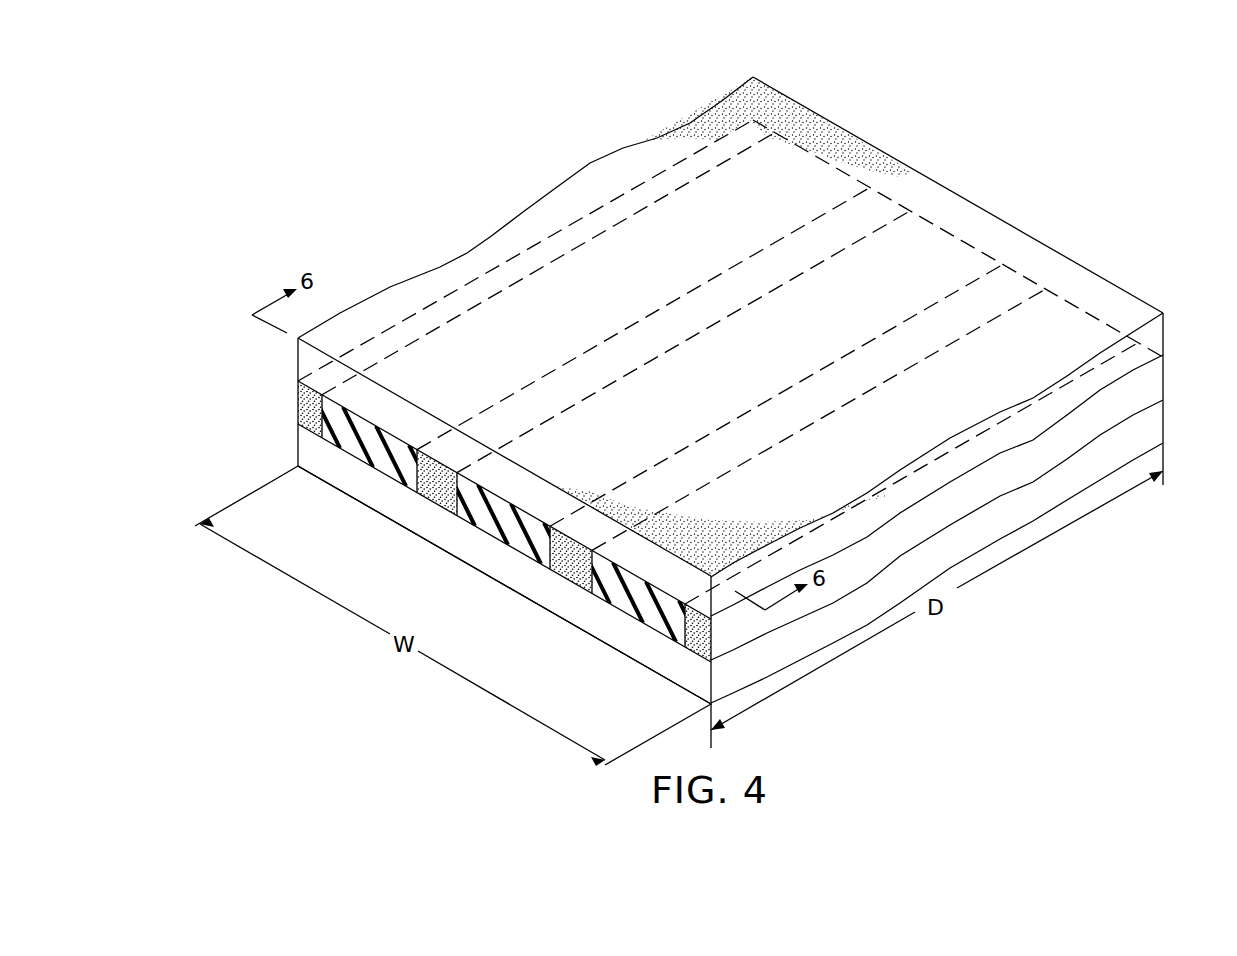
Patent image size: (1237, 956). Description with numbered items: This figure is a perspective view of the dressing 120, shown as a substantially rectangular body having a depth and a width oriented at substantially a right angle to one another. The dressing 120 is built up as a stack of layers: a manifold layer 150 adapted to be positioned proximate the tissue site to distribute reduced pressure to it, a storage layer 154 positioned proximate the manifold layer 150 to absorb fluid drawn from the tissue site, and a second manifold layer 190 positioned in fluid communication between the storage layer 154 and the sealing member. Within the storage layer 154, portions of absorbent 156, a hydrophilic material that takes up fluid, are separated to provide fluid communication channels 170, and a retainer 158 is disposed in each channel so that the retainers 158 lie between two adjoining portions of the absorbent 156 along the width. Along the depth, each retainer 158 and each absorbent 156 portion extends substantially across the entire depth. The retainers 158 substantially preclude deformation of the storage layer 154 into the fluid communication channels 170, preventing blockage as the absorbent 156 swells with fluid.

The dressing 120 is at (706, 397).
The second manifold layer 190 is at (455, 266).
The storage layer 154 is at (298, 392).
The absorbent 156 is at (352, 443).
The retainer 158 is at (443, 549).
The fluid communication channel 170 is at (298, 406).
The manifold layer 150 is at (1158, 425).